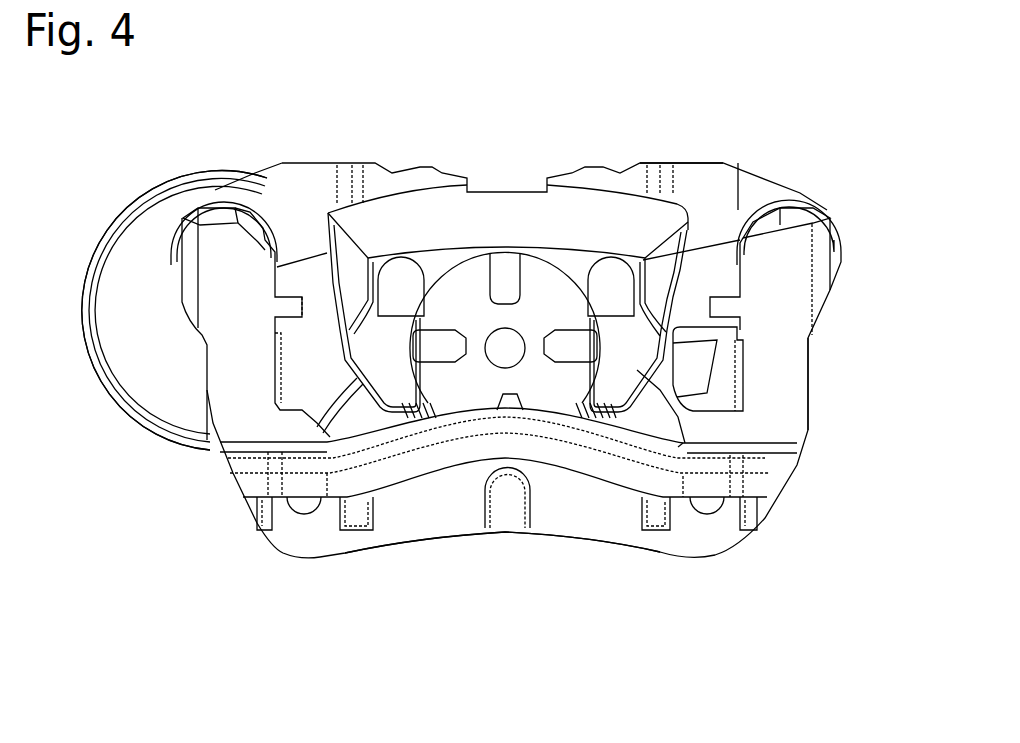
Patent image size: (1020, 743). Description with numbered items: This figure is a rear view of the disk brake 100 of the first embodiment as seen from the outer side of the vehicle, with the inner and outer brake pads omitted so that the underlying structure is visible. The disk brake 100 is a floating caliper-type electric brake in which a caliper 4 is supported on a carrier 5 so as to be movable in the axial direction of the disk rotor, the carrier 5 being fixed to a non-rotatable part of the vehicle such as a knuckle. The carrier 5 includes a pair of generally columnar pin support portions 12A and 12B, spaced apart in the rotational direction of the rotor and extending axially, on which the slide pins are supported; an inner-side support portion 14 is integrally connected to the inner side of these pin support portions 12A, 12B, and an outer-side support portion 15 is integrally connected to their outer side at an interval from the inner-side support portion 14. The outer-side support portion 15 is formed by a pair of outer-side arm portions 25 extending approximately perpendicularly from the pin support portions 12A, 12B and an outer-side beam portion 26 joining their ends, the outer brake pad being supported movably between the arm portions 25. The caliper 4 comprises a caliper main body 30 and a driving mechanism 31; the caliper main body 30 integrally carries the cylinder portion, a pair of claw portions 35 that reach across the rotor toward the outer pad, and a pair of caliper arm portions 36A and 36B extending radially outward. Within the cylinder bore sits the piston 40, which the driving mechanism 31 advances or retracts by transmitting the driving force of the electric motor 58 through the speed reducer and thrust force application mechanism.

The disk brake 100 is at (800, 178).
The caliper 4 is at (318, 160).
The carrier 5 is at (772, 518).
The pin support portion 12A is at (218, 195).
The pin support portion 12B is at (782, 205).
The inner-side support portion 14 is at (547, 535).
The outer-side support portion 15 is at (583, 478).
The outer-side arm portion 25 is at (788, 369).
The outer-side beam portion 26 is at (467, 455).
The caliper main body 30 is at (578, 185).
The driving mechanism 31 is at (174, 310).
The claw portion 35 is at (394, 390).
The caliper arm portion 36A is at (330, 185).
The caliper arm portion 36B is at (688, 185).
The piston 40 is at (460, 390).
The electric motor 58 is at (140, 383).